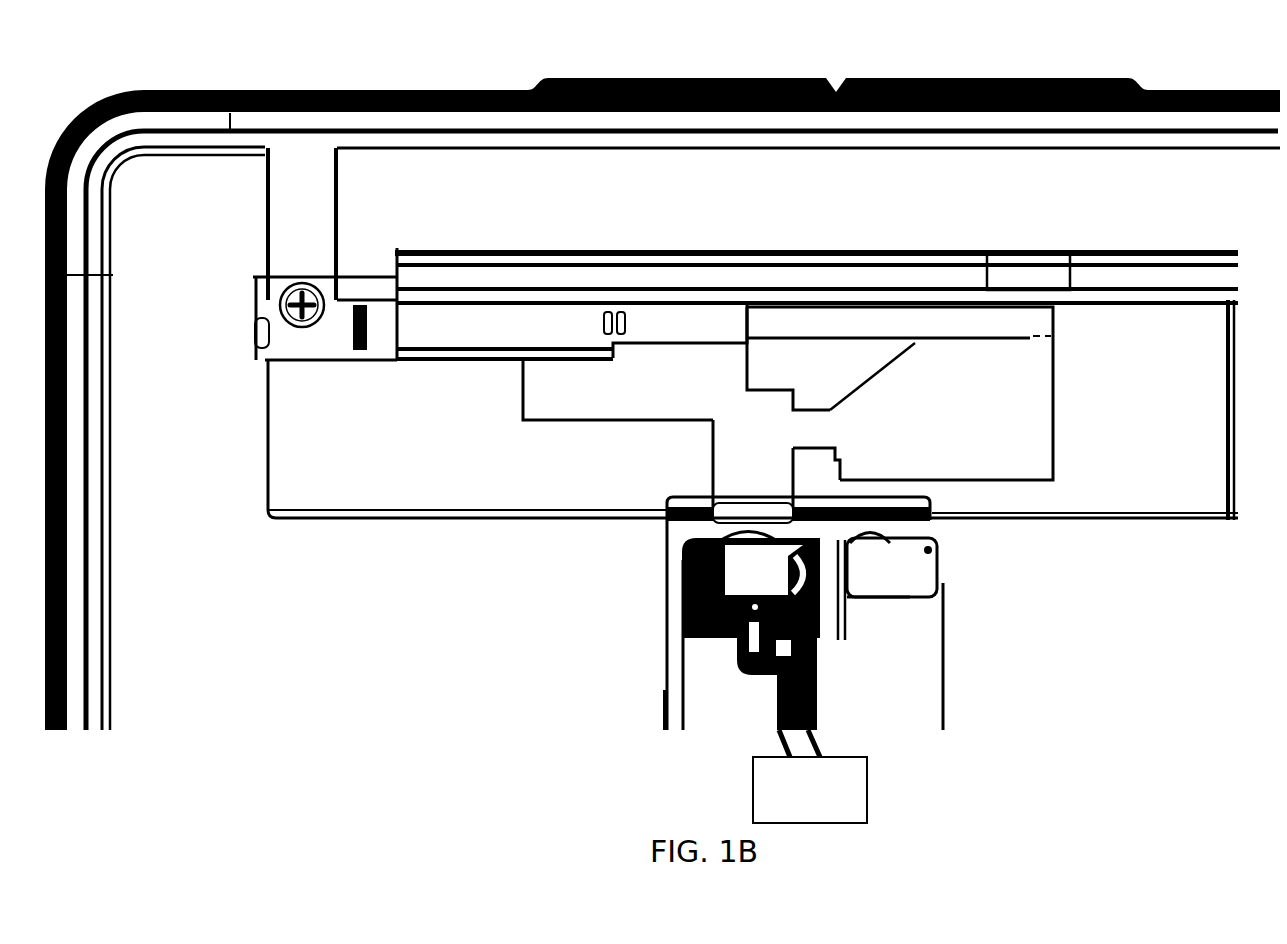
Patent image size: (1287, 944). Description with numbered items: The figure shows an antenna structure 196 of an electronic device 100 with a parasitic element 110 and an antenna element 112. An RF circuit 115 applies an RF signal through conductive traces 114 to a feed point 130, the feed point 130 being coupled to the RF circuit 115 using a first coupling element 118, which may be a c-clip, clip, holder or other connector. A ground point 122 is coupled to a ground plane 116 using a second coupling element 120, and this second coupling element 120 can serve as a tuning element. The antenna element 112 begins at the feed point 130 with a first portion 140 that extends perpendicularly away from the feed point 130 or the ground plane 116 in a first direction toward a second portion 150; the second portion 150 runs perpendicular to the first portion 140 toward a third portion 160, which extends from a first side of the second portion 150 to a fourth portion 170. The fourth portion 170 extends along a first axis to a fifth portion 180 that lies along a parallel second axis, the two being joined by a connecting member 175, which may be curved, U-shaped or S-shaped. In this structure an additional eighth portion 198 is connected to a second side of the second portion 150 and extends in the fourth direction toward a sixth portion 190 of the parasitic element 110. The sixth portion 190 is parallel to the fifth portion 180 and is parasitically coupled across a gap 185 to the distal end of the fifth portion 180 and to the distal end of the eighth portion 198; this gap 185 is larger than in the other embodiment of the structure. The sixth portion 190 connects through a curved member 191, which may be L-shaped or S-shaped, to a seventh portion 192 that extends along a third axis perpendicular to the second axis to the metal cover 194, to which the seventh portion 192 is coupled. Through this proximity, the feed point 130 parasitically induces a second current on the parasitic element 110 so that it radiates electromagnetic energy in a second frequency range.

The electronic device 100 is at (123, 80).
The metal cover 194 is at (355, 88).
The antenna structure 196 is at (253, 236).
The seventh portion 192 is at (325, 224).
The curved member 191 is at (318, 337).
The parasitic element 110 is at (470, 320).
The sixth portion 190 is at (506, 332).
The gap 185 is at (680, 322).
The eighth portion 198 is at (618, 389).
The second portion 150 is at (739, 465).
The third portion 160 is at (816, 465).
The fifth portion 180 is at (900, 393).
The fourth portion 170 is at (895, 383).
The connecting member 175 is at (1051, 336).
The antenna element 112 is at (1036, 384).
The feed point 130 is at (717, 528).
The first portion 140 is at (798, 513).
The ground point 122 is at (883, 530).
The first coupling element 118 is at (751, 588).
The conductive traces 114 is at (818, 704).
The second coupling element 120 is at (892, 567).
The ground plane 116 is at (813, 635).
The RF circuit 115 is at (810, 790).